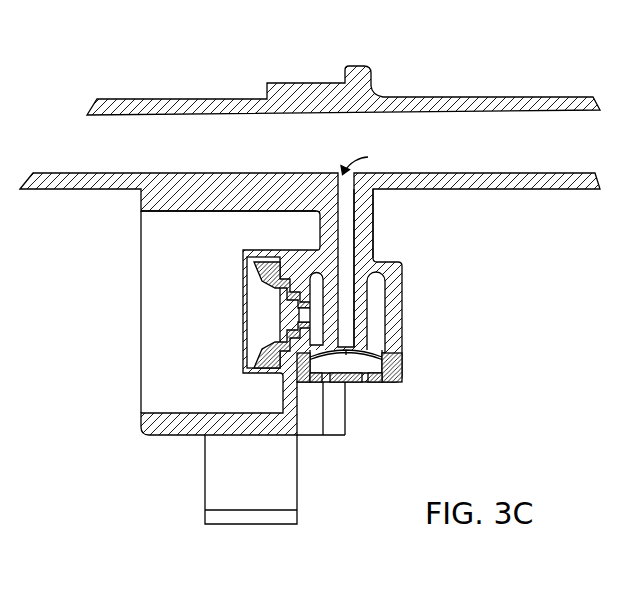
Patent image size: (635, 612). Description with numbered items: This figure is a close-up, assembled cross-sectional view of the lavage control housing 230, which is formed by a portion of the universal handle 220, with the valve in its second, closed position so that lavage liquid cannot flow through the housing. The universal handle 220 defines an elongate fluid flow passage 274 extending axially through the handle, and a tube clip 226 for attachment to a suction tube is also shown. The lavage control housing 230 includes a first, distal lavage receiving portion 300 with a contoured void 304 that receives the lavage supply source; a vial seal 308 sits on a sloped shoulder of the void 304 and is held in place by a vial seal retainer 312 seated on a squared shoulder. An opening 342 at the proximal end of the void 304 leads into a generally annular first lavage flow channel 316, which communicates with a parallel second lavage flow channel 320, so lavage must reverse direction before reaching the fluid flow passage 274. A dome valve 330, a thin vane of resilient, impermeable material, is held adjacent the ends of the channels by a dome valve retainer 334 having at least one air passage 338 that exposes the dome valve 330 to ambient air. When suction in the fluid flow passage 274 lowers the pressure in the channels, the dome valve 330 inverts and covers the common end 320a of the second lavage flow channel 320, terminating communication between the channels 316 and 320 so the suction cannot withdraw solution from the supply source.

The universal handle 220 is at (194, 99).
The fluid flow passage 274 is at (243, 134).
The lavage control housing 230 is at (397, 288).
The first, distal lavage receiving portion 300 is at (166, 351).
The contoured void 304 is at (213, 347).
The second lavage flow channel 320 is at (349, 240).
The vial seal retainer 312 is at (278, 266).
The opening 342 is at (296, 302).
The vial seal 308 is at (300, 313).
The first lavage flow channel 316 is at (312, 280).
The dome valve 330 is at (396, 357).
The common end of the second lavage flow channel 320a is at (346, 350).
The dome valve retainer 334 is at (393, 380).
The air passage 338 is at (370, 383).
The tube clip 226 is at (296, 517).